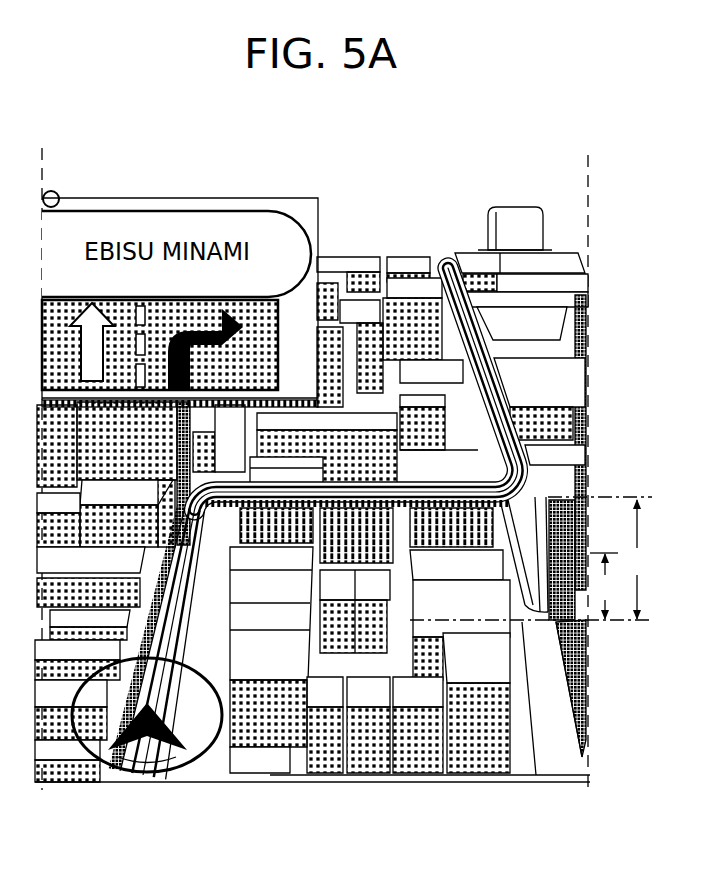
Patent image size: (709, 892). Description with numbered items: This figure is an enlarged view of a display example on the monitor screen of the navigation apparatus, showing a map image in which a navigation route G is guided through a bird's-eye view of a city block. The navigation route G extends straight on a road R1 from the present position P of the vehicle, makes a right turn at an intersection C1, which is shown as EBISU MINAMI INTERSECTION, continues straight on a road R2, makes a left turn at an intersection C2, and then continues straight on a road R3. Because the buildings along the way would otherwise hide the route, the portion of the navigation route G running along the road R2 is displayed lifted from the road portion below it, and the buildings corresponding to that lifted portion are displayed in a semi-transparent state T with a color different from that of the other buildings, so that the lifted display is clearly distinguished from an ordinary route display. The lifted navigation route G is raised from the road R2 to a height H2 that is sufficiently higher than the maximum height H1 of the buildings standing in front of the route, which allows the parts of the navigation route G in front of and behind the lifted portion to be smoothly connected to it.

The navigation route G is at (323, 523).
The intersection C1 is at (199, 611).
The intersection C2 is at (525, 627).
The road R1 is at (194, 652).
The road R2 is at (403, 622).
The road R3 is at (553, 768).
The semi-transparent state T is at (384, 546).
The present position P is at (167, 775).
The maximum height of the buildings H1 is at (605, 586).
The height H2 is at (638, 559).